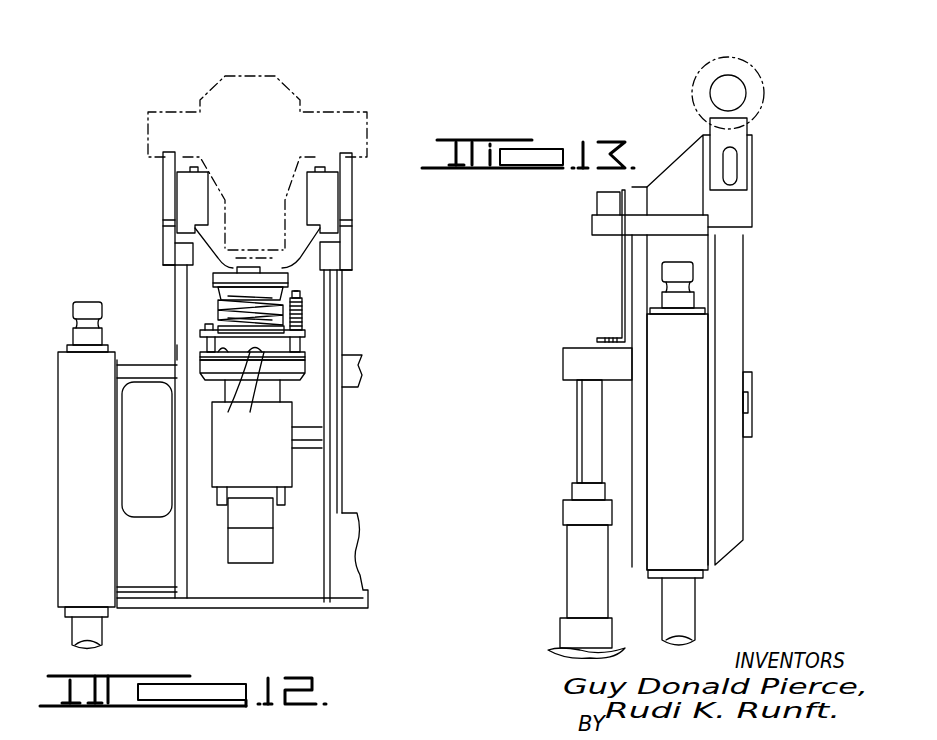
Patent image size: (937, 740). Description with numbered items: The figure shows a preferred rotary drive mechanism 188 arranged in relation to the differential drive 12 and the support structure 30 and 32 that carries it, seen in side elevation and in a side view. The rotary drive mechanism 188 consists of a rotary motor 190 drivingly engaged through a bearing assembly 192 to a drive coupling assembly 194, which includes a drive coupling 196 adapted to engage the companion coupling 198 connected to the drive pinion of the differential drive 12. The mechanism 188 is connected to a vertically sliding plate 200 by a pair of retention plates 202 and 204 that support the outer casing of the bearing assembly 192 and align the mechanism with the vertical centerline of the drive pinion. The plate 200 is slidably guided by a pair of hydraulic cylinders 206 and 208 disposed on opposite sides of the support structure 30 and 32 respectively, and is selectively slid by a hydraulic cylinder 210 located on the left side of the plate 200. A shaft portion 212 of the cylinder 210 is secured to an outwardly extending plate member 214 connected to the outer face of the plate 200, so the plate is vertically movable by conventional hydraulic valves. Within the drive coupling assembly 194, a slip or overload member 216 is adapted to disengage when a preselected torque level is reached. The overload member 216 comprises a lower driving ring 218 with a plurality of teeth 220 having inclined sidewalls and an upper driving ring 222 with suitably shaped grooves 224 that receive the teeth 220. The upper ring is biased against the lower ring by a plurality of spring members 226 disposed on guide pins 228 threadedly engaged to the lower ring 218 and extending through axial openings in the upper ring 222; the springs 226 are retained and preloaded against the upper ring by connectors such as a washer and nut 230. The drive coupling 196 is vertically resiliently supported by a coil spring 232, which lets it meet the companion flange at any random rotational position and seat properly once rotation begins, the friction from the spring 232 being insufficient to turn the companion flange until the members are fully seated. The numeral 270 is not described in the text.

In FIG. 12, the differential drive 12 is at (290, 100).
In FIG. 13, the differential drive 12 is at (745, 68).
In FIG. 12, the support structure 30 is at (163, 192).
In FIG. 12, the support structure 32 is at (352, 205).
In FIG. 13, the support structure 32 is at (735, 175).
In FIG. 12, the rotary drive mechanism 188 is at (300, 395).
In FIG. 12, the rotary motor 190 is at (265, 518).
In FIG. 12, the bearing assembly 192 is at (282, 455).
In FIG. 13, the bearing assembly 192 is at (753, 410).
In FIG. 12, the drive coupling assembly 194 is at (210, 300).
In FIG. 12, the drive coupling 196 is at (262, 268).
In FIG. 12, the companion coupling 198 is at (290, 235).
In FIG. 12, the vertically sliding plate 200 is at (290, 592).
In FIG. 13, the vertically sliding plate 200 is at (632, 262).
In FIG. 12, the retention plate 202 is at (200, 435).
In FIG. 12, the retention plate 204 is at (312, 433).
In FIG. 13, the retention plate 204 is at (753, 395).
In FIG. 12, the hydraulic cylinder 206 is at (70, 365).
In FIG. 13, the hydraulic cylinder 208 is at (718, 485).
In FIG. 13, the hydraulic cylinder 210 is at (567, 490).
In FIG. 13, the shaft portion 212 is at (577, 400).
In FIG. 13, the outwardly extending plate member 214 is at (572, 360).
In FIG. 12, the slip or overload member 216 is at (300, 348).
In FIG. 12, the lower driving ring 218 is at (300, 358).
In FIG. 12, the teeth 220 is at (205, 346).
In FIG. 12, the upper driving ring 222 is at (205, 332).
In FIG. 12, the grooves 224 is at (300, 348).
In FIG. 12, the spring members 226 is at (302, 310).
In FIG. 12, the guide pins 228 is at (300, 362).
In FIG. 12, the washer and nut 230 is at (302, 298).
In FIG. 12, the coil spring 232 is at (205, 305).
In FIG. 12, the wires 270 is at (248, 395).